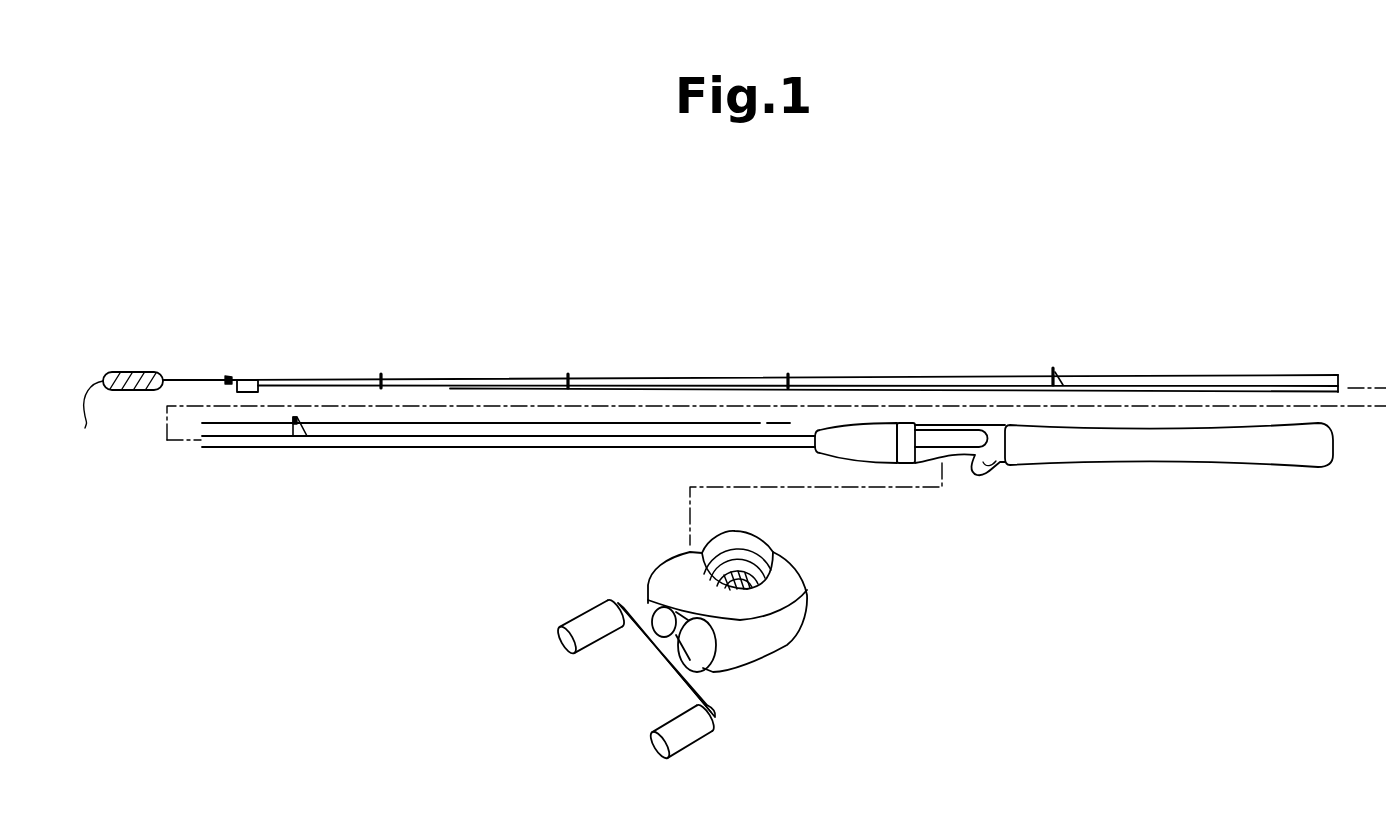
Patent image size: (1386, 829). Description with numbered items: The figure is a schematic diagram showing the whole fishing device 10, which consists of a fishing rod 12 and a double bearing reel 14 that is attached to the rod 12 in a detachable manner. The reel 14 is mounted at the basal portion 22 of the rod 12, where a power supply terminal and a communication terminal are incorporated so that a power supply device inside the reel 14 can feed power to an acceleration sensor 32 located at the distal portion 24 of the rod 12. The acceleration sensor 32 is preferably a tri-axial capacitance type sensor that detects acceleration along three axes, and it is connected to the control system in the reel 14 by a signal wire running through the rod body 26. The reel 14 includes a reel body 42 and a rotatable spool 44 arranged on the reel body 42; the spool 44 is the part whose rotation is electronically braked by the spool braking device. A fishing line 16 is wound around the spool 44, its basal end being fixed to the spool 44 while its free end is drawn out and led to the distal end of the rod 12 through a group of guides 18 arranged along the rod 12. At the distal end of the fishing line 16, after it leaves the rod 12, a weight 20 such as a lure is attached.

The fishing device 10 is at (1189, 325).
The fishing rod 12 is at (500, 449).
The double bearing reel 14 is at (810, 606).
The fishing line 16 is at (641, 376).
The group of guides 18 is at (382, 373).
The weight 20 is at (128, 392).
The basal portion 22 is at (942, 424).
The distal portion 24 is at (271, 380).
The rod body 26 is at (397, 449).
The acceleration sensor 32 is at (246, 378).
The reel body 42 is at (784, 570).
The spool 44 is at (740, 568).